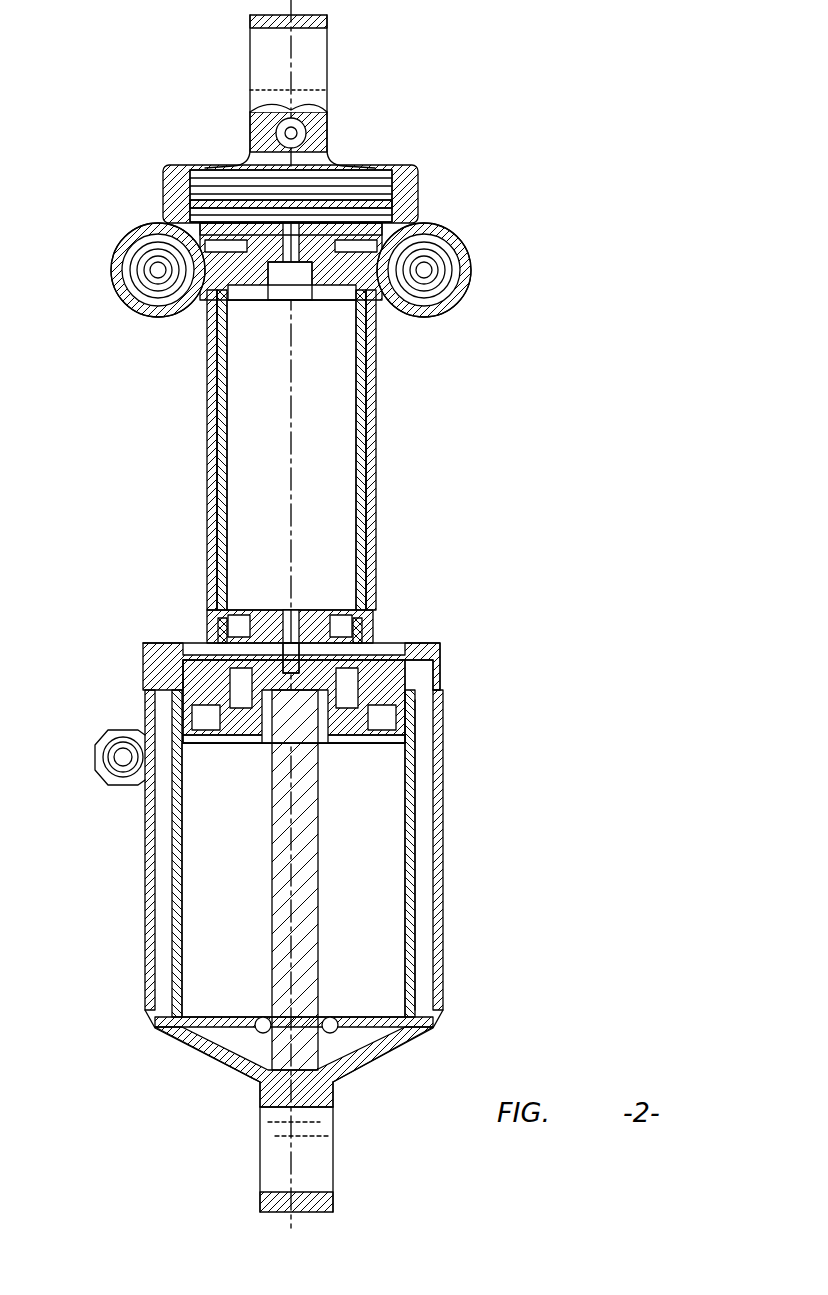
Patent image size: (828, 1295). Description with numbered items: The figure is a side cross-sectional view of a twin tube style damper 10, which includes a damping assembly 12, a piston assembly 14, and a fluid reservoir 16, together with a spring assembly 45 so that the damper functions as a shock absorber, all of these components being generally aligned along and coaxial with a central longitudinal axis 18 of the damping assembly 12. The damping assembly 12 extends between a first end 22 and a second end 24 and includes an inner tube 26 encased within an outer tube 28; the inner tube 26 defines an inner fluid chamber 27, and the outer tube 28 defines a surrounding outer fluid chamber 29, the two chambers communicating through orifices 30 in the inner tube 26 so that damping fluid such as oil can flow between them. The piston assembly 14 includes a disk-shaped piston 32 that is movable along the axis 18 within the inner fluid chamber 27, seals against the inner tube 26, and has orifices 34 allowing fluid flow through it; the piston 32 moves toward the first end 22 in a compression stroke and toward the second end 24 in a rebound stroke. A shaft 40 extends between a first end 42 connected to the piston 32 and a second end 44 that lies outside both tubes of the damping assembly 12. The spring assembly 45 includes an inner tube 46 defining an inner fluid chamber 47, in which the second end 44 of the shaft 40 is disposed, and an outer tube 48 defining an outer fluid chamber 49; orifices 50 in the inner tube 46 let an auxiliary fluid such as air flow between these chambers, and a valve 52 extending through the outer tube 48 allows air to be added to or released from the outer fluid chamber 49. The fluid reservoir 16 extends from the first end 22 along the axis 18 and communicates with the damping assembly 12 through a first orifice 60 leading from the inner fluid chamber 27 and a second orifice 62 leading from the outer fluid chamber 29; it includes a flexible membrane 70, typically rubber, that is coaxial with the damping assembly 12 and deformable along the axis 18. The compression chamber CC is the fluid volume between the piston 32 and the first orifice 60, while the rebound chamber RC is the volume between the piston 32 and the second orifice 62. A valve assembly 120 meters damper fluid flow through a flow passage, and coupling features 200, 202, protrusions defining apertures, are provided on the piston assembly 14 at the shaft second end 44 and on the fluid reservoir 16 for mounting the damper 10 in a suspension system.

The twin tube style damper 10 is at (578, 150).
The damping assembly 12 is at (311, 450).
The piston assembly 14 is at (412, 797).
The fluid reservoir 16 is at (292, 247).
The central longitudinal axis 18 is at (270, 372).
The first end 22 is at (165, 198).
The second end 24 is at (226, 746).
The inner tube 26 is at (374, 447).
The inner fluid chamber 27 is at (336, 483).
The outer tube 28 is at (375, 548).
The outer fluid chamber 29 is at (368, 488).
The orifices 30 is at (279, 594).
The piston 32 is at (266, 612).
The orifices 34 is at (212, 569).
The shaft 40 is at (314, 852).
The first end 42 is at (315, 622).
The second end 44 is at (335, 1086).
The spring assembly 45 is at (285, 927).
The inner tube 46 is at (442, 928).
The inner fluid chamber 47 is at (377, 945).
The outer tube 48 is at (441, 840).
The outer fluid chamber 49 is at (430, 882).
The orifices 50 is at (426, 1029).
The valve 52 is at (124, 768).
The first orifice 60 is at (245, 256).
The second orifice 62 is at (340, 303).
The flexible membrane 70 is at (343, 247).
The valve assembly 120 is at (467, 284).
The coupling feature 200 is at (242, 1146).
The coupling feature 202 is at (243, 78).
The compression chamber CC is at (274, 459).
The rebound chamber RC is at (208, 619).